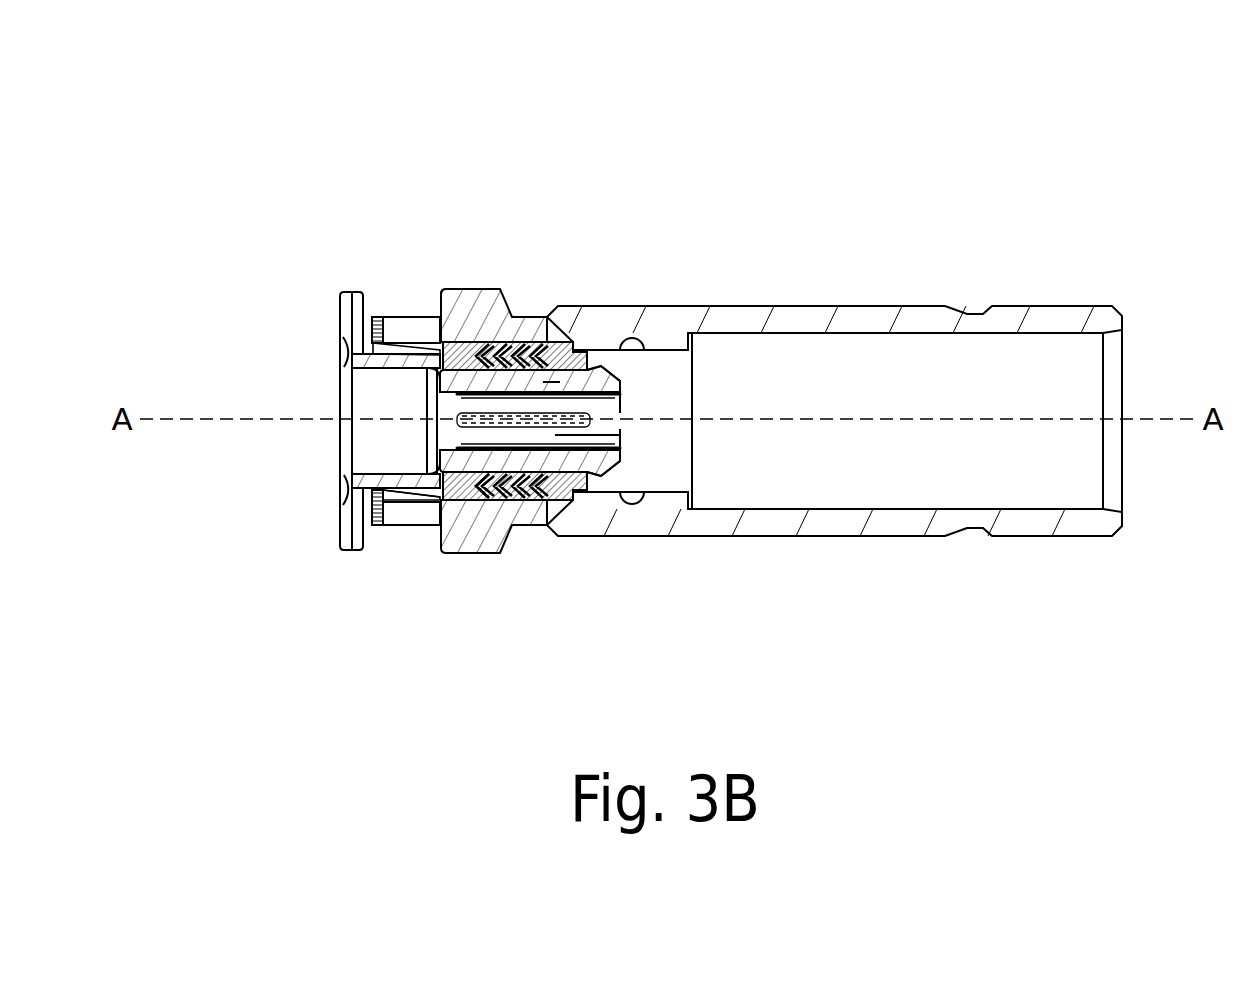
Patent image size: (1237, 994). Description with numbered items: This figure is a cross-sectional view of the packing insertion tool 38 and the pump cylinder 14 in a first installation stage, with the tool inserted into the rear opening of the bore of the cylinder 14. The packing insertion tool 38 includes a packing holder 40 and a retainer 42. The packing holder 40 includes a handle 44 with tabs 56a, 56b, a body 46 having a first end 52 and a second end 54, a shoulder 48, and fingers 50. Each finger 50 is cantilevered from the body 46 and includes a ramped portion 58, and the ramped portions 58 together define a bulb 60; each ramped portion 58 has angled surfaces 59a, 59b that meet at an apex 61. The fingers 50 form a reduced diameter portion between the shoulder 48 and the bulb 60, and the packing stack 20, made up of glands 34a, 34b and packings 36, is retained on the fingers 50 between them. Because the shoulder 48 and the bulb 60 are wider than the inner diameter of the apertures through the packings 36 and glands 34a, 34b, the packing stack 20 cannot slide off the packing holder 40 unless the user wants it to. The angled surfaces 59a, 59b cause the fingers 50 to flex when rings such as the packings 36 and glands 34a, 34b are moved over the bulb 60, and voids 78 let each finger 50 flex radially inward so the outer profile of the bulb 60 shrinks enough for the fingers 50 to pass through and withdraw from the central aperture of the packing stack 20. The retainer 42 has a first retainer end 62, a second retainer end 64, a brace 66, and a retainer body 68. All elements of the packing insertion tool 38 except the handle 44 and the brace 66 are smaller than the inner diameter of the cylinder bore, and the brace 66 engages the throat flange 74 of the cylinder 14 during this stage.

The cylinder 14 is at (735, 304).
The packing stack 20 is at (534, 337).
The gland 34a is at (562, 463).
The gland 34b is at (455, 500).
The packings 36 is at (496, 502).
The packing insertion tool 38 is at (310, 452).
The packing holder 40 is at (383, 447).
The retainer 42 is at (422, 341).
The handle 44 is at (337, 335).
The body 46 is at (363, 492).
The shoulder 48 is at (473, 343).
The fingers 50 is at (592, 422).
The first end 52 is at (362, 338).
The second end 54 is at (430, 500).
The tab 56a is at (343, 291).
The tab 56b is at (345, 538).
The ramped portion 58 is at (627, 387).
The angled surface 59a is at (610, 466).
The angled surface 59b is at (590, 470).
The bulb 60 is at (607, 364).
The apex 61 is at (543, 382).
The first retainer end 62 is at (362, 316).
The second retainer end 64 is at (446, 336).
The brace 66 is at (372, 318).
The retainer body 68 is at (400, 503).
The throat flange 74 is at (410, 513).
The voids 78 is at (473, 501).